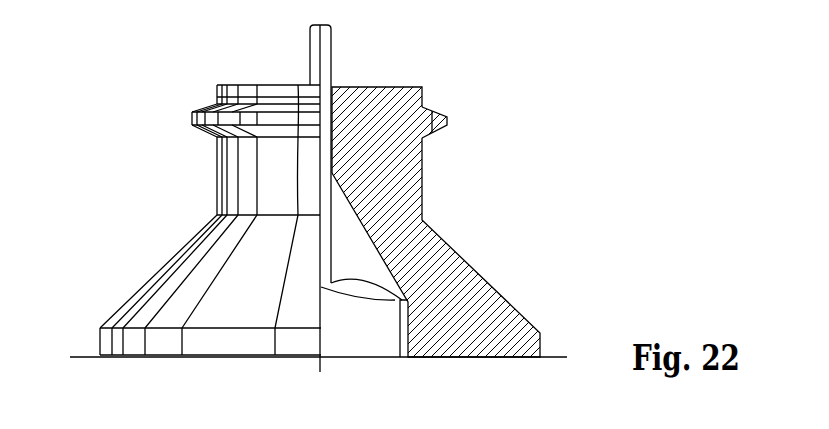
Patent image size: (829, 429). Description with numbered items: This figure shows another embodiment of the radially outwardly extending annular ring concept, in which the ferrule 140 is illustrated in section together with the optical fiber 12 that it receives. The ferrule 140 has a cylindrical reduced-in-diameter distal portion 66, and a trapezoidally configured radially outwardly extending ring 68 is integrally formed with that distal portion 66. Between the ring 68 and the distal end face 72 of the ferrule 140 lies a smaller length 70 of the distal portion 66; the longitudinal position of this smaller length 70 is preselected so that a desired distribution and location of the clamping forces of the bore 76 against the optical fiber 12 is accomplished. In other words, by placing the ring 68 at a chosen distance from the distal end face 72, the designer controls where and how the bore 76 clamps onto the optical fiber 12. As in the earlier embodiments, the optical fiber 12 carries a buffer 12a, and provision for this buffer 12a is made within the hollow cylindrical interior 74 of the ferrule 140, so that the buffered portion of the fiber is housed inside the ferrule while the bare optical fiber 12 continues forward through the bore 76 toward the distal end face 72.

The optical fiber 12 is at (332, 45).
The buffer 12a is at (403, 328).
The cylindrical reduced-in-diameter distal portion 66 is at (422, 187).
The radially outwardly extending ring 68 is at (447, 120).
The smaller length 70 is at (217, 92).
The distal end face 72 is at (370, 87).
The hollow cylindrical interior 74 is at (405, 312).
The bore 76 is at (333, 157).
The ferrule 140 is at (158, 273).